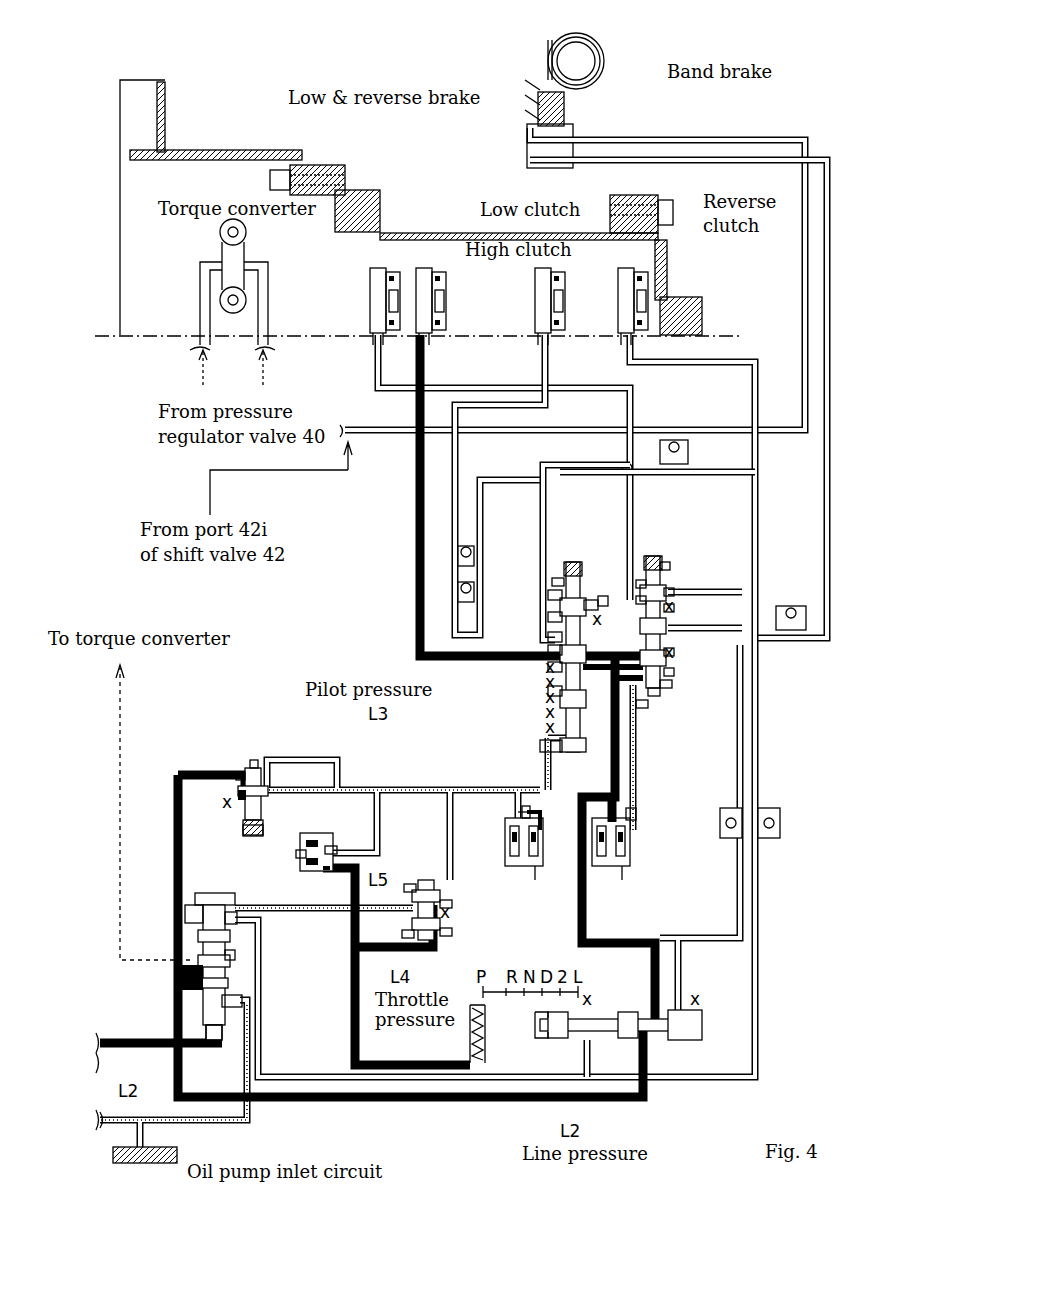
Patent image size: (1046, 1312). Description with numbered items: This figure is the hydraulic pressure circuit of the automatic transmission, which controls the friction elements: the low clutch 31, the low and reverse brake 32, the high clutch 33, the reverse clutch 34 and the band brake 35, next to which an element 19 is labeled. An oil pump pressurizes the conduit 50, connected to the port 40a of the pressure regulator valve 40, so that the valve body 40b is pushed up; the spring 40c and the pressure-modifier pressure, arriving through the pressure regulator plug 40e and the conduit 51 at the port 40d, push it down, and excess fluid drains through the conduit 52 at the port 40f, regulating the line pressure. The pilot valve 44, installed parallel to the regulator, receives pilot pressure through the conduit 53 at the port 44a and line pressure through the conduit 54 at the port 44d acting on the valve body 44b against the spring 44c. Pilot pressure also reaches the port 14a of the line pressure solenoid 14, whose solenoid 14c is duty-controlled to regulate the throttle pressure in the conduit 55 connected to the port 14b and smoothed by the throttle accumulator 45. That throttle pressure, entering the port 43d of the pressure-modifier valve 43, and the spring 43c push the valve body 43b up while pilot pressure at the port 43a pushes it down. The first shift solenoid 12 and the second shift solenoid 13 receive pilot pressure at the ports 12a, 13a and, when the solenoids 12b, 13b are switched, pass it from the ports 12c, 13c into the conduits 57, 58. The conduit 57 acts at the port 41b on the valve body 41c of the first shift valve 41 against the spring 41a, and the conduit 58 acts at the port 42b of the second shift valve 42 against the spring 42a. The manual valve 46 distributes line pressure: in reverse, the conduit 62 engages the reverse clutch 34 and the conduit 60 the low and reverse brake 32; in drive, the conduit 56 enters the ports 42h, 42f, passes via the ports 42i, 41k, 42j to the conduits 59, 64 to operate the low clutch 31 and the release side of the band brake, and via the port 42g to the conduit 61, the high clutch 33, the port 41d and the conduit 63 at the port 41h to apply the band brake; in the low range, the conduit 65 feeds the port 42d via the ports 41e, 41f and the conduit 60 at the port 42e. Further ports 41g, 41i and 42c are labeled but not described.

The first shift solenoid 12 is at (600, 866).
The port 12a is at (608, 820).
The solenoid 12b is at (622, 880).
The port 12c is at (636, 836).
The second shift solenoid 13 is at (512, 866).
The port 13a is at (518, 812).
The solenoid 13b is at (535, 880).
The port 13c is at (526, 806).
The line pressure solenoid 14 is at (308, 833).
The port 14a is at (333, 846).
The port 14b is at (323, 870).
The solenoid 14c is at (296, 856).
The band brake servo 19 is at (573, 120).
The low clutch 31 is at (442, 272).
The low & reverse brake 32 is at (376, 268).
The high clutch 33 is at (536, 276).
The reverse clutch 34 is at (650, 278).
The band brake 35 is at (606, 62).
The pressure regulator valve 40 is at (214, 893).
The port 40a is at (216, 1050).
The valve body 40b is at (230, 975).
The spring 40c is at (235, 953).
The port 40d is at (237, 928).
The pressure regulator plug 40e is at (185, 913).
The port 40f is at (242, 1003).
The first shift valve 41 is at (672, 556).
The spring 41a is at (670, 566).
The port 41b is at (656, 696).
The valve body 41c is at (674, 672).
The port 41d is at (674, 608).
The port 41e is at (674, 592).
The port 41f is at (641, 580).
The port of shift valve 41 41g is at (638, 596).
The port 41h is at (674, 656).
The port of shift valve 41 41i is at (672, 684).
The port 41k is at (640, 708).
The second shift valve 42 is at (572, 562).
The spring 42a is at (552, 580).
The port 42b is at (540, 746).
The port of shift valve 42 42c is at (548, 594).
The port 42d is at (590, 600).
The port 42e is at (548, 616).
The port 42f is at (603, 596).
The port 42g is at (548, 636).
The port 42h is at (548, 666).
The port 42i is at (548, 650).
The port 42j is at (548, 690).
The pressure-modifier valve 43 is at (426, 880).
The port 43a is at (452, 904).
The valve body 43b is at (408, 884).
The spring 43c is at (452, 936).
The port 43d is at (402, 940).
The pilot valve 44 is at (250, 768).
The port 44a is at (256, 760).
The valve body 44b is at (236, 774).
The spring 44c is at (243, 830).
The port 44d is at (238, 800).
The throttle accumulator 45 is at (488, 1050).
The manual valve 46 is at (702, 1025).
The conduit 50 is at (150, 1039).
The conduit 51 is at (245, 906).
The conduit 52 is at (253, 1043).
The conduit 53 is at (303, 758).
The conduit 54 is at (173, 821).
The conduit 55 is at (345, 1055).
The conduit 56 is at (690, 905).
The conduit 57 is at (640, 795).
The conduit 58 is at (543, 838).
The conduit 59 is at (416, 481).
The conduit 60 is at (635, 405).
The conduit 61 is at (460, 462).
The conduit 62 is at (750, 383).
The conduit 63 is at (822, 475).
The conduit 64 is at (800, 303).
The conduit 65 is at (735, 875).